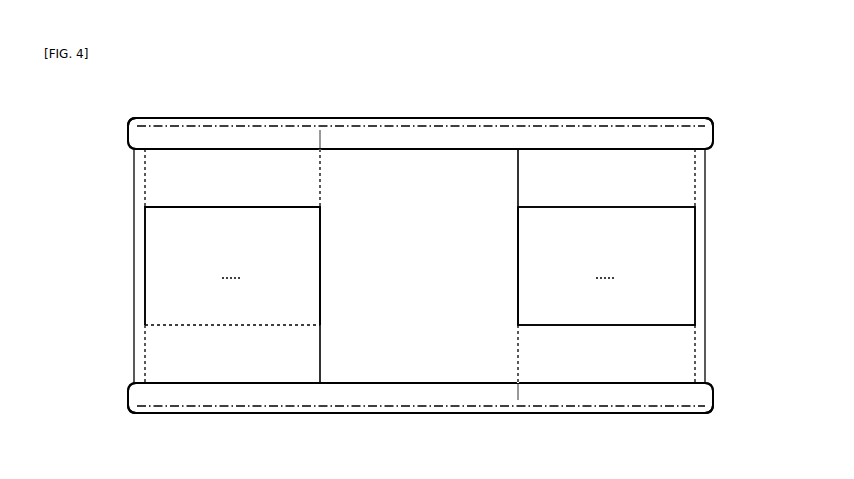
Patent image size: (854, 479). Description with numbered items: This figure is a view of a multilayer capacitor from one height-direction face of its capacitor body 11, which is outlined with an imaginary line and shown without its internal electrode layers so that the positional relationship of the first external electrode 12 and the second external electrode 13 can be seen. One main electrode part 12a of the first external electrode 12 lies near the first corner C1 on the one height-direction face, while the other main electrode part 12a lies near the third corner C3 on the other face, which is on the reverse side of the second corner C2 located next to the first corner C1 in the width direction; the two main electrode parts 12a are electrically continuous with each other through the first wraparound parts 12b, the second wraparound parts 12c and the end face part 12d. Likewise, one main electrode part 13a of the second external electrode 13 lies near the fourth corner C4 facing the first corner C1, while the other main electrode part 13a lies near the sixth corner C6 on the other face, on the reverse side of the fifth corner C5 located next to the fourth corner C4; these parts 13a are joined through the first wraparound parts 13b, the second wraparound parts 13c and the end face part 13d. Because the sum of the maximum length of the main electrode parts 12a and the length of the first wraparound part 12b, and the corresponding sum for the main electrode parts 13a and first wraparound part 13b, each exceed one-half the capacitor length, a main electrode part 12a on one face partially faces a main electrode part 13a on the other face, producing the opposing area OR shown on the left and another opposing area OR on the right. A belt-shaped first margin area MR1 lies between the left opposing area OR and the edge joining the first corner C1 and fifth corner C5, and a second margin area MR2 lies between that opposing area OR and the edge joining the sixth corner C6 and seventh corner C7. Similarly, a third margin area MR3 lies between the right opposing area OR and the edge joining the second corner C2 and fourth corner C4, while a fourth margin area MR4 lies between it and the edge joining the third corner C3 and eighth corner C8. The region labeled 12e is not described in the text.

The capacitor body 11 is at (134, 179).
The first external electrode 12 is at (420, 420).
The end face part 12d is at (359, 413).
The main electrode part 12a is at (225, 352).
The first wraparound part 12b is at (518, 393).
The second wraparound part 12c is at (128, 397).
The lower plate second region 12e is at (608, 355).
The second external electrode 13 is at (420, 114).
The end face part 13d is at (478, 118).
The main electrode part 13a is at (228, 170).
The first wraparound part 13b is at (321, 136).
The second wraparound part 13c is at (128, 137).
The first corner C1 is at (119, 424).
The seventh corner C7 is at (125, 414).
The second corner C2 is at (722, 424).
The third corner C3 is at (713, 413).
The fourth corner C4 is at (722, 112).
The eighth corner C8 is at (722, 110).
The fifth corner C5 is at (119, 112).
The sixth corner C6 is at (125, 118).
The first margin area MR1 is at (200, 266).
The second margin area MR2 is at (134, 265).
The third margin area MR3 is at (638, 266).
The fourth margin area MR4 is at (705, 263).
The opposing area OR is at (419, 266).